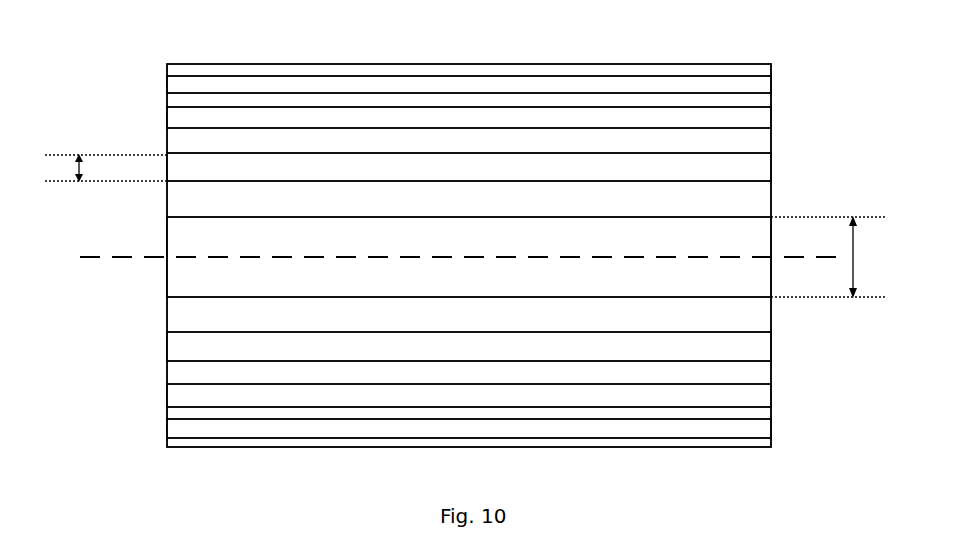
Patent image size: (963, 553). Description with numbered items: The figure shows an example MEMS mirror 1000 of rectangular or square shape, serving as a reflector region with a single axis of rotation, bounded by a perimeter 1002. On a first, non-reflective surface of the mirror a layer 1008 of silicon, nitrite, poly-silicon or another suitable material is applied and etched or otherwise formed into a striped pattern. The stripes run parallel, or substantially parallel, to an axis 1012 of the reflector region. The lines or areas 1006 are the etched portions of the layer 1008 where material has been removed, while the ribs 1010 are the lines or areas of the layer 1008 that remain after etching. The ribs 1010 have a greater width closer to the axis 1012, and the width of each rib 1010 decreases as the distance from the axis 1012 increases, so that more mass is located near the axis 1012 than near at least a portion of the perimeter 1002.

The MEMS mirror 1000 is at (110, 70).
The perimeter 1002 is at (680, 448).
The lines or areas 1006 is at (747, 68).
The layer 1008 is at (193, 236).
The ribs 1010 is at (453, 226).
The axis 1012 is at (432, 256).